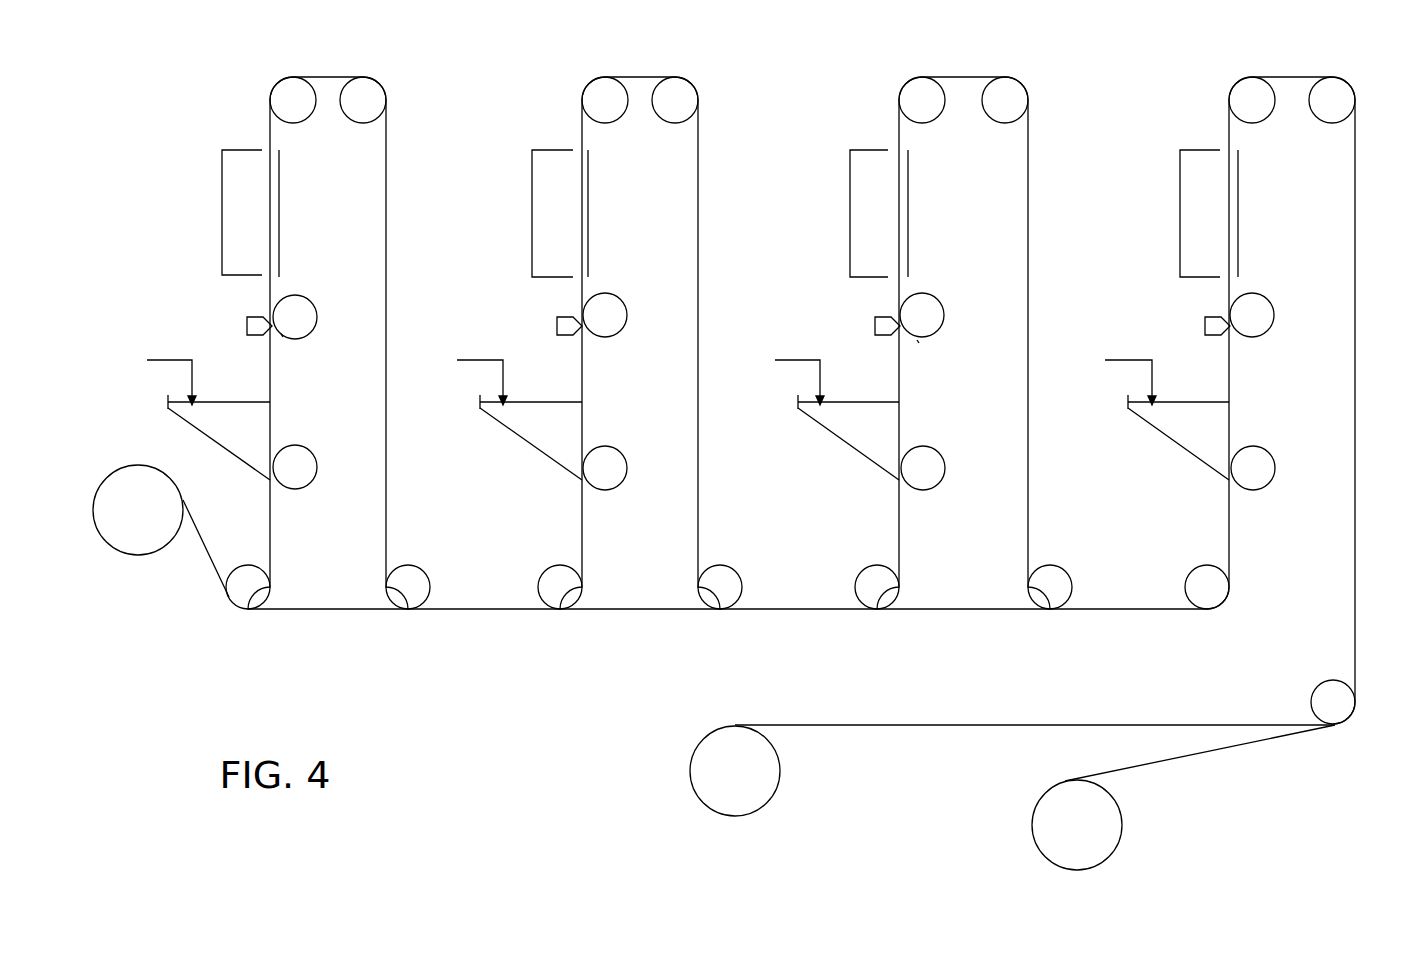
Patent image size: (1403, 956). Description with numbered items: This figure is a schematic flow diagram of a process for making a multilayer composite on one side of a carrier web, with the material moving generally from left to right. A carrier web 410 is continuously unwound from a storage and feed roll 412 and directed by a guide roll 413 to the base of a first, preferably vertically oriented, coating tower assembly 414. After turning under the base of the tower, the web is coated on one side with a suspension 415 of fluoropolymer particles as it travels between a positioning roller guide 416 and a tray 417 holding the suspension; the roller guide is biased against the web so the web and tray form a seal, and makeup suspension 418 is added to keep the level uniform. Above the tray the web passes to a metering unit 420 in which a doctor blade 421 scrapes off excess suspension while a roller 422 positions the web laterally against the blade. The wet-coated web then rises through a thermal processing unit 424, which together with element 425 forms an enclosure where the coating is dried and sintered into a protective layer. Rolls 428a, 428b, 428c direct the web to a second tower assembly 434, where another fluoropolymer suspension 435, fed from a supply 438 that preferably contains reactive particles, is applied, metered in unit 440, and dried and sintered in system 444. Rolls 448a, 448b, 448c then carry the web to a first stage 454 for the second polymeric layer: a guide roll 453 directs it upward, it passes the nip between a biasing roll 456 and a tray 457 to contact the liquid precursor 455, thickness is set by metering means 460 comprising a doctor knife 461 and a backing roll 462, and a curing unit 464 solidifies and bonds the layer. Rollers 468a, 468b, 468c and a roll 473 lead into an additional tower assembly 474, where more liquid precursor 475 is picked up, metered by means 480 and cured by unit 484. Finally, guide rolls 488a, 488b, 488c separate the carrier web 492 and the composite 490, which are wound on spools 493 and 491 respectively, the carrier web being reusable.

The carrier web 410 is at (210, 560).
The storage and feed roll 412 is at (102, 537).
The guide roll 413 is at (227, 573).
The first coating tower assembly 414 is at (273, 518).
The suspension 415 is at (245, 430).
The positioning roller guide 416 is at (317, 455).
The tray 417 is at (217, 447).
The makeup suspension 418 is at (177, 357).
The metering unit 420 is at (320, 327).
The doctor blade 421 is at (266, 315).
The roller 422 is at (282, 335).
The thermal processing unit 424 is at (222, 257).
The enclosure element 425 is at (283, 263).
The roll 428a is at (271, 93).
The roll 428b is at (386, 93).
The roll 428c is at (433, 595).
The second tower assembly 434 is at (533, 580).
The fluoropolymer suspension 435 is at (547, 425).
The supply 438 is at (475, 367).
The metering unit 440 is at (627, 317).
The drying and sintering system 444 is at (532, 212).
The roll 448a is at (582, 102).
The roll 448b is at (698, 93).
The roll 448c is at (745, 593).
The guide roll 453 is at (852, 588).
The first stage 454 is at (900, 558).
The liquid precursor 455 is at (863, 423).
The biasing roll 456 is at (947, 478).
The tray 457 is at (843, 445).
The metering means 460 is at (945, 315).
The doctor knife 461 is at (875, 323).
The backing roll 462 is at (918, 343).
The curing unit 464 is at (850, 175).
The roller 468a is at (899, 95).
The roller 468b is at (1028, 103).
The roller 468c is at (1075, 593).
The roll 473 is at (1183, 595).
The tower assembly 474 is at (1233, 543).
The liquid precursor of second polymeric composition 475 is at (1168, 427).
The metering means 480 is at (1273, 332).
The curing unit 484 is at (1180, 192).
The guide roll 488a is at (1229, 100).
The guide roll 488b is at (1357, 95).
The guide roll 488c is at (1290, 708).
The composite 490 is at (1147, 767).
The spool 491 is at (1037, 803).
The carrier web 492 is at (982, 723).
The spool 493 is at (780, 770).